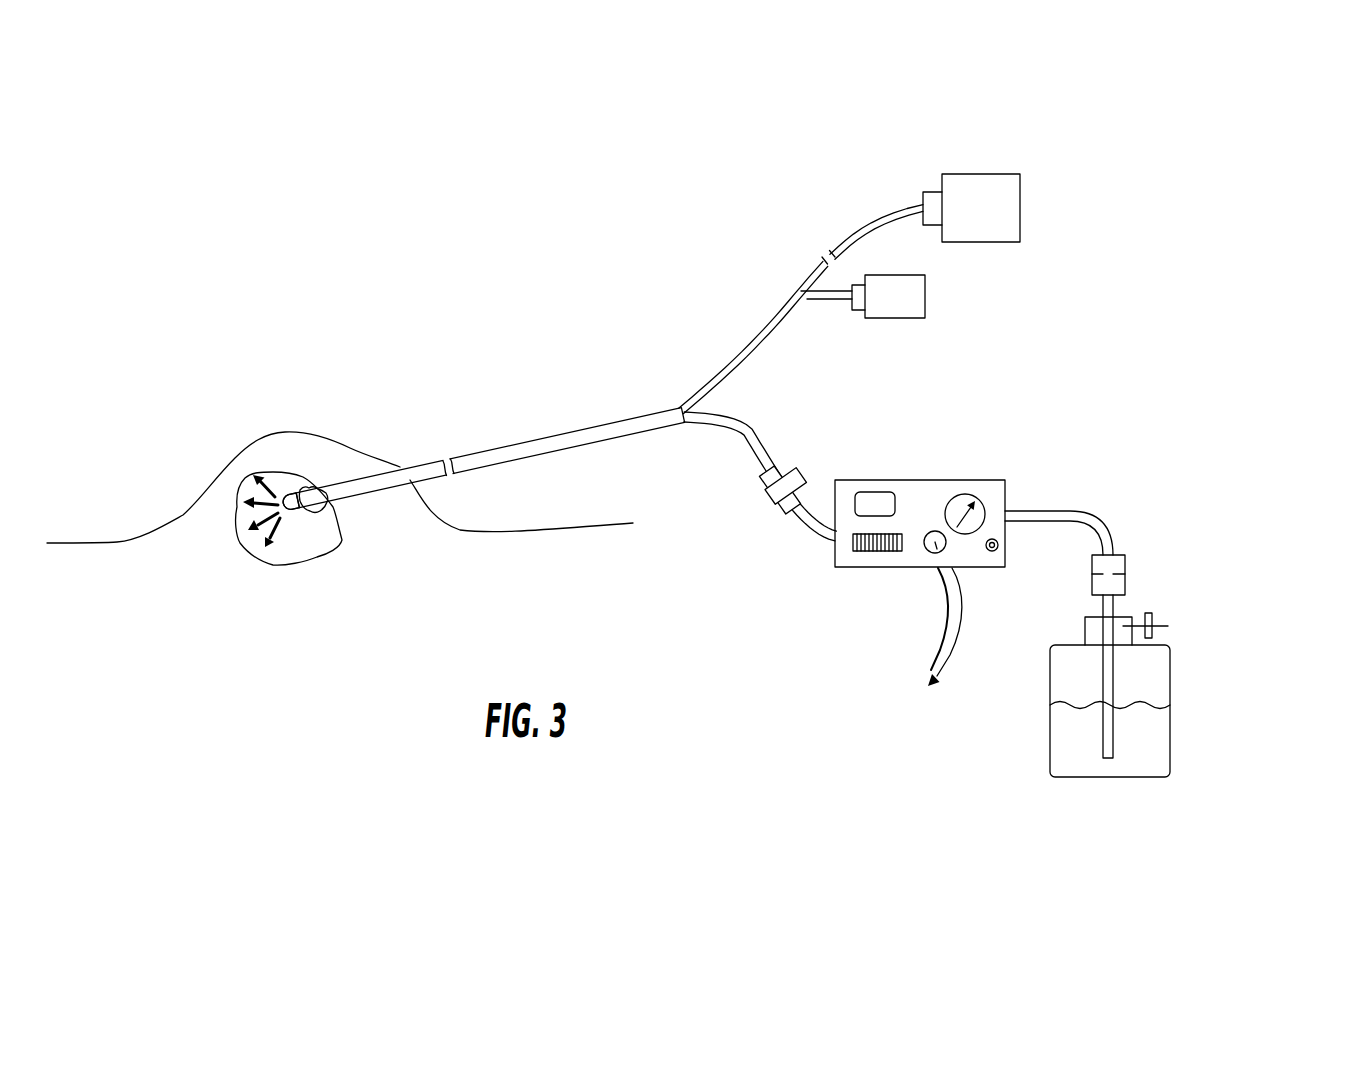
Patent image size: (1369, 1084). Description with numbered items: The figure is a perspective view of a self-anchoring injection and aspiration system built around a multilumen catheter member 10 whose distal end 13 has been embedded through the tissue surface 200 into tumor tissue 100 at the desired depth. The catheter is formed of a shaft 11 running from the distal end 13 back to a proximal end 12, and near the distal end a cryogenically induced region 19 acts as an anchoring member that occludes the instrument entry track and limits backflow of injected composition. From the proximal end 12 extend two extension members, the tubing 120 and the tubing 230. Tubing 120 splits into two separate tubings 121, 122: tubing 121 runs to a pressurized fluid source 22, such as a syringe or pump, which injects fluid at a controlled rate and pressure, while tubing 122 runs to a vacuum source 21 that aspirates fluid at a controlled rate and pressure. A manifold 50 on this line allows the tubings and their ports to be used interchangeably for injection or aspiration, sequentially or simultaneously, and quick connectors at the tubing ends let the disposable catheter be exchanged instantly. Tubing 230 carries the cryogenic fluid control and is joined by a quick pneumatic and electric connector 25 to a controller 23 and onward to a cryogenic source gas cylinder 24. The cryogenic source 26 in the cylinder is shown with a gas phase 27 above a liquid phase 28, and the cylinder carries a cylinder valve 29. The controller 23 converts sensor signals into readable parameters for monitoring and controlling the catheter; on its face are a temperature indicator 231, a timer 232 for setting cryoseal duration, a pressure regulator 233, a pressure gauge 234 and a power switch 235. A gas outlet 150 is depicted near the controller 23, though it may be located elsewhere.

The multilumen catheter member 10 is at (402, 270).
The shaft 11 is at (535, 439).
The proximal end 12 is at (690, 378).
The distal end 13 is at (297, 472).
The cryogenically induced region 19 is at (313, 512).
The vacuum source 21 is at (1022, 182).
The pressurized fluid source 22 is at (927, 290).
The controller 23 is at (947, 478).
The cryogenic source gas cylinder 24 is at (1132, 778).
The quick pneumatic/electric connector 25 is at (793, 470).
The cryogenic source 26 is at (1205, 691).
The gas phase 27 is at (1140, 675).
The liquid phase 28 is at (1137, 748).
The cylinder valve 29 is at (1163, 622).
The manifold 50 is at (803, 267).
The tumor tissue 100 is at (250, 543).
The tubing 120 is at (763, 355).
The tubing 121 is at (817, 303).
The tubing 122 is at (882, 220).
The gas outlet 150 is at (960, 622).
The tissue surface 200 is at (292, 566).
The tubing 230 is at (757, 425).
The temperature indicator 231 is at (848, 505).
The timer 232 is at (872, 551).
The pressure regulator 233 is at (927, 550).
The pressure gauge 234 is at (983, 506).
The power switch 235 is at (998, 548).